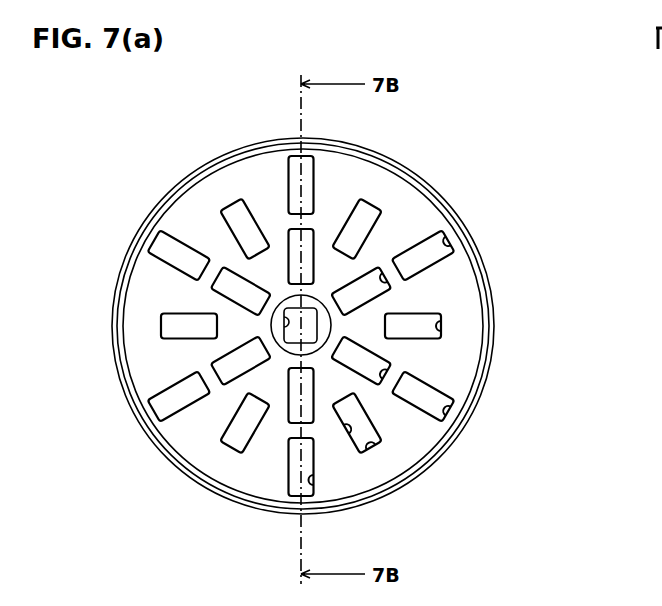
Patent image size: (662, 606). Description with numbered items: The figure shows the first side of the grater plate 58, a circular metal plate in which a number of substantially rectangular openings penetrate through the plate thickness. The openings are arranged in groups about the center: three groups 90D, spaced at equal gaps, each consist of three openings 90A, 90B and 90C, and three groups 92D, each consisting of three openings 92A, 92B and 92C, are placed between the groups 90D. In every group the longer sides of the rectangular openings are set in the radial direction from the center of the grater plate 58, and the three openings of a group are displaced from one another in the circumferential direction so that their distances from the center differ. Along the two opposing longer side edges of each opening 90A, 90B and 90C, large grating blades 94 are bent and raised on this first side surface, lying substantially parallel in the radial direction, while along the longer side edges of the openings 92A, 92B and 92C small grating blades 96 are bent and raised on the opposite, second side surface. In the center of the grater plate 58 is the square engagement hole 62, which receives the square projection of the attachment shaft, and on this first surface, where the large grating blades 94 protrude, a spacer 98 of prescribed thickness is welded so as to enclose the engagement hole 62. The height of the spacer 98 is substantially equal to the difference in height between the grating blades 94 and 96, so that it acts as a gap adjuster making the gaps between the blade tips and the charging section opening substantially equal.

The grater plate 58 is at (368, 150).
The square engagement hole 62 is at (284, 322).
The spacer 98 is at (288, 348).
The small grating blades 96 is at (313, 481).
The large grating blades 94 is at (353, 428).
The opening 92A is at (445, 247).
The opening 92B is at (438, 325).
The opening 92C is at (385, 277).
The group of openings 92D is at (491, 264).
The opening 90A is at (448, 405).
The opening 90B is at (373, 440).
The opening 90C is at (378, 370).
The group of openings 90D is at (481, 433).